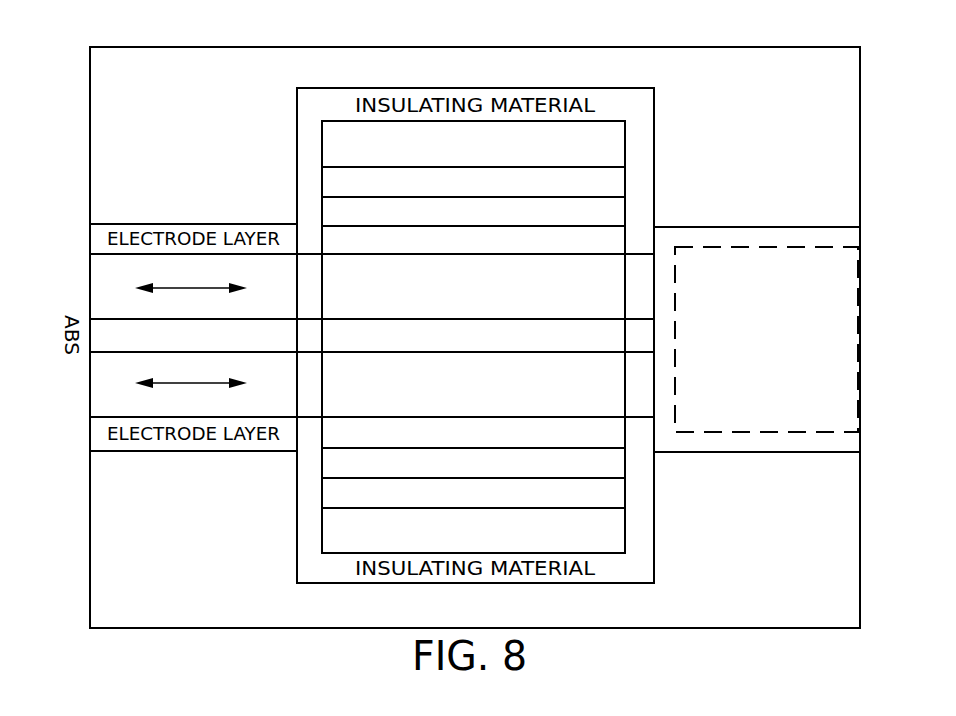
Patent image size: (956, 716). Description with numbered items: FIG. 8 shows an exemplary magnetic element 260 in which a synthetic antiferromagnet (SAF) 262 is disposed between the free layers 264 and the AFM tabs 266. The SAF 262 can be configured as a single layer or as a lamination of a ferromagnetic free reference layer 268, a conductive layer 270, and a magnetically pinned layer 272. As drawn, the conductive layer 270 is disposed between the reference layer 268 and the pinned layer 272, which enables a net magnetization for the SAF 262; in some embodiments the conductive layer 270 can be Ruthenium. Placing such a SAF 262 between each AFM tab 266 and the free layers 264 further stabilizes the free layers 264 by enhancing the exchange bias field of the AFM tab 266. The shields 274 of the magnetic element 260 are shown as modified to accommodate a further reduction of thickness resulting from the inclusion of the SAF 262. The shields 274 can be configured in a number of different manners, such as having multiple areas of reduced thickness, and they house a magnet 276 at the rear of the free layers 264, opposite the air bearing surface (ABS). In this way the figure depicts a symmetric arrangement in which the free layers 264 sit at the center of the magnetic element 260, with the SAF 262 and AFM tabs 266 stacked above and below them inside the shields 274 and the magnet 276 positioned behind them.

The magnetic element 260 is at (115, 26).
The synthetic antiferromagnet (SAF) 262 is at (643, 212).
The free layers 264 is at (372, 335).
The AFM tabs 266 is at (473, 338).
The reference layer 268 is at (473, 337).
The conductive layer 270 is at (473, 337).
The pinned layer 272 is at (473, 337).
The shields 274 is at (475, 338).
The magnet 276 is at (766, 339).